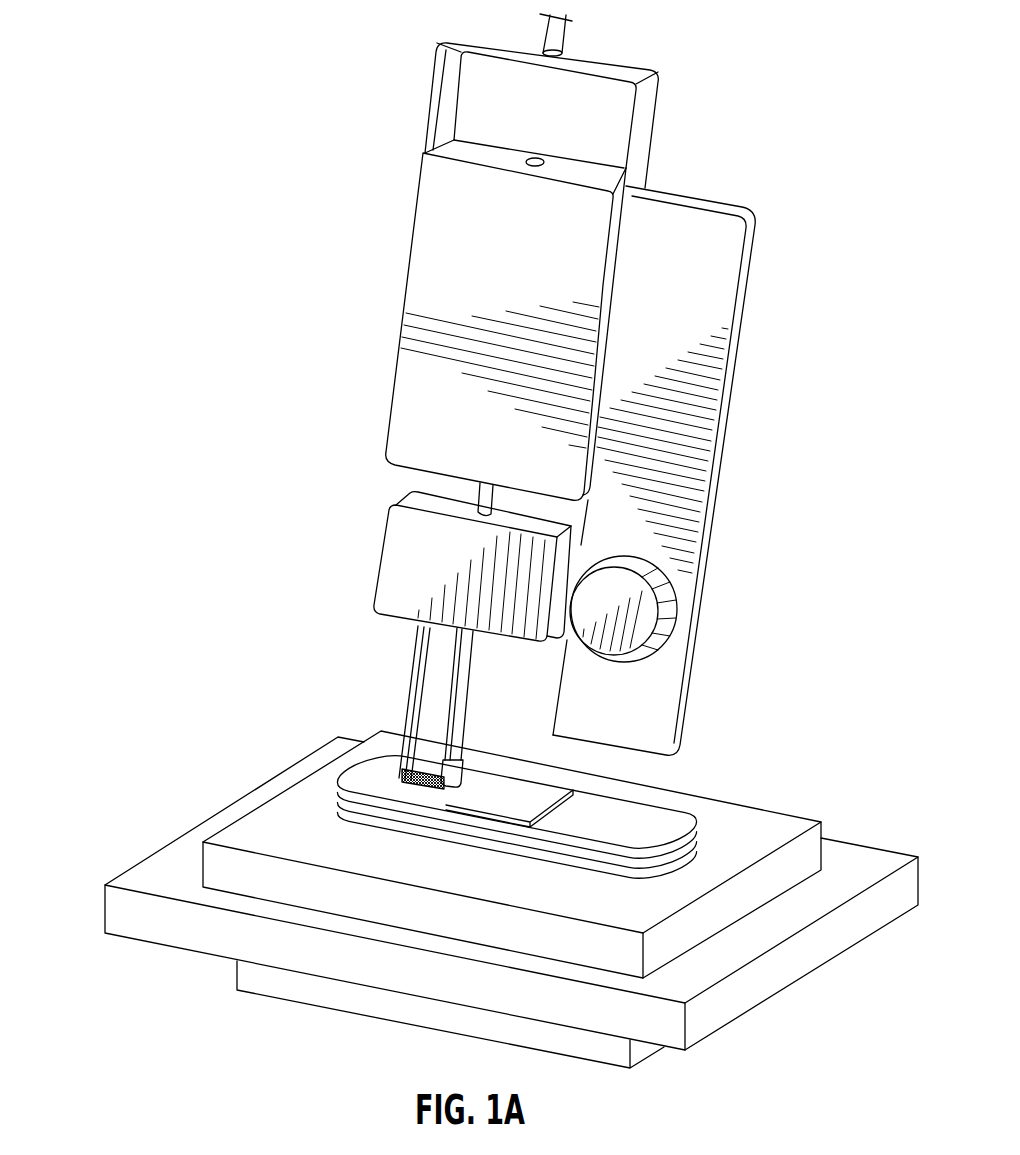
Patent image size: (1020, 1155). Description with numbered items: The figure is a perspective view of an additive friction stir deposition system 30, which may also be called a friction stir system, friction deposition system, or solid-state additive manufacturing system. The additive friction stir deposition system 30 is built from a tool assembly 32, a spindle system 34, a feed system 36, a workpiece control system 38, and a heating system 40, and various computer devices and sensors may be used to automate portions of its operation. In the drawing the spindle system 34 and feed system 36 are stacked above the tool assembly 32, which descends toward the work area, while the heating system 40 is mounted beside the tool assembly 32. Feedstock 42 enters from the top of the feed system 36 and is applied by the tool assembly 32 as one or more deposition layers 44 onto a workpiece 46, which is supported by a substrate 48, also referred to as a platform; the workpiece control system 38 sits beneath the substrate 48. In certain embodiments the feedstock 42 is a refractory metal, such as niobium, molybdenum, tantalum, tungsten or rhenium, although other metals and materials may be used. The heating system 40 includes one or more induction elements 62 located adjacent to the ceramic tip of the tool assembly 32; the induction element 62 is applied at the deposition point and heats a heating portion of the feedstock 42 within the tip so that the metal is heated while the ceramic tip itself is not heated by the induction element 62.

The additive friction stir deposition system 30 is at (788, 214).
The tool assembly 32 is at (452, 688).
The spindle system 34 is at (403, 290).
The feed system 36 is at (428, 97).
The workpiece control system 38 is at (367, 1016).
The heating system 40 is at (664, 590).
The feedstock 42 is at (563, 37).
The deposition layers 44 is at (344, 807).
The workpiece 46 is at (202, 863).
The substrate 48 is at (106, 906).
The induction element 62 is at (426, 767).